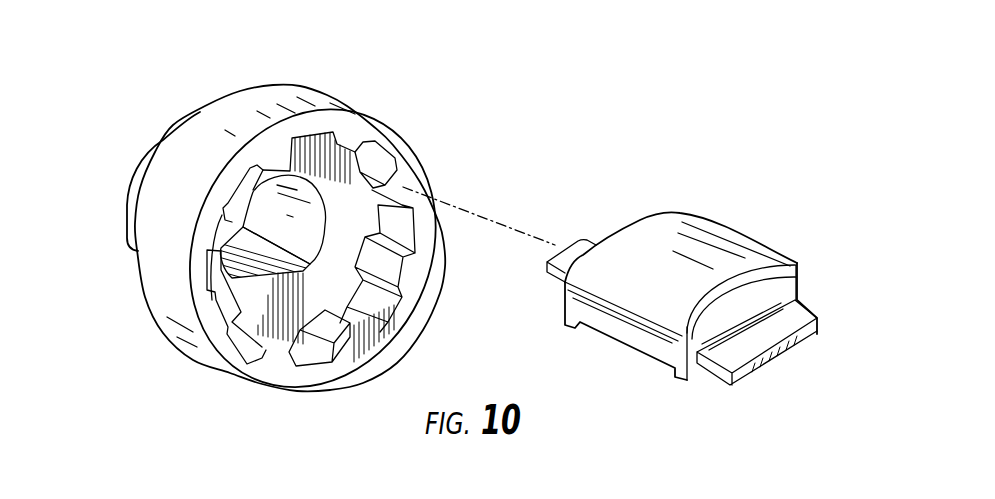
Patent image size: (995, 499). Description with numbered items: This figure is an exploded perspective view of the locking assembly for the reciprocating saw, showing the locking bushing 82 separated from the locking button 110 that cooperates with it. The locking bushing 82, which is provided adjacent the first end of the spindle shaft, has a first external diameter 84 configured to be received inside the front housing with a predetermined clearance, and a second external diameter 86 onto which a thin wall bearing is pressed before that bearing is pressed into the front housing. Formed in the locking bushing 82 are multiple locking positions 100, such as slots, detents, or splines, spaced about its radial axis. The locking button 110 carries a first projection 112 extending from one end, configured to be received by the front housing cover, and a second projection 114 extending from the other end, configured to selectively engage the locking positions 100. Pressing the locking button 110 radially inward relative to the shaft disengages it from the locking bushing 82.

The locking bushing 82 is at (284, 75).
The first external diameter 84 is at (190, 153).
The second external diameter 86 is at (133, 188).
The locking positions 100 is at (313, 135).
The locking button 110 is at (712, 248).
The first projection 112 is at (785, 331).
The second projection 114 is at (576, 255).